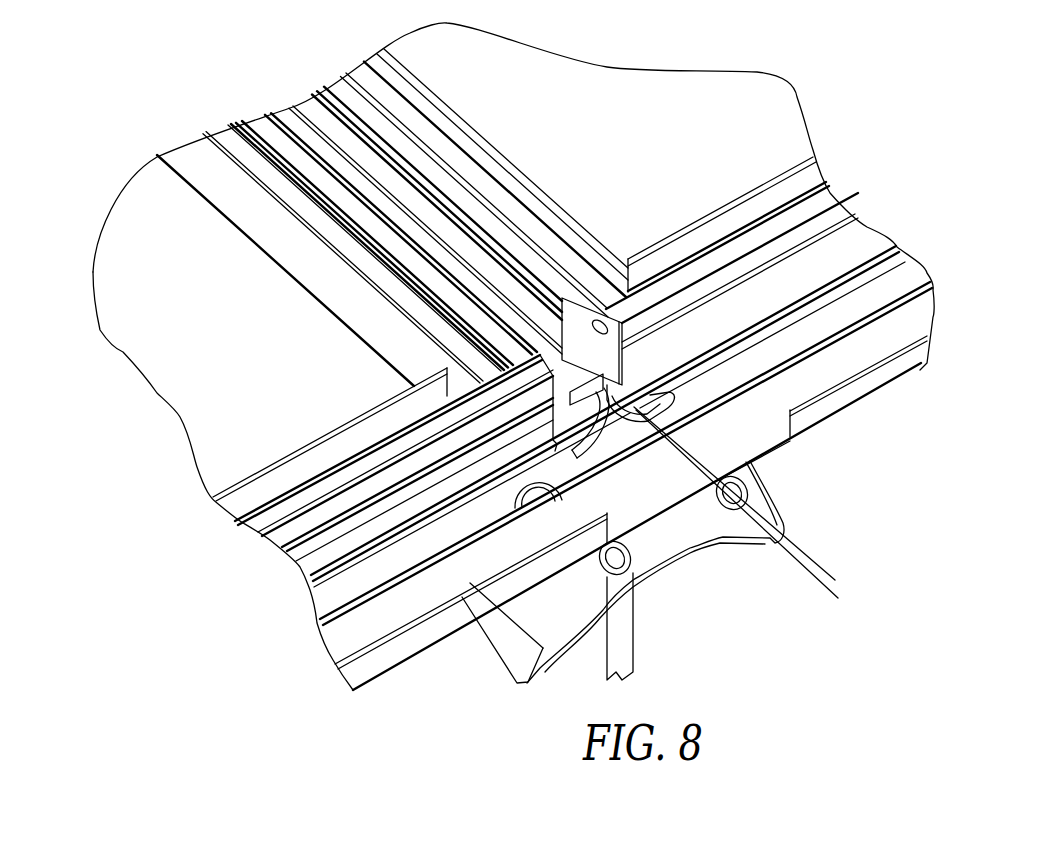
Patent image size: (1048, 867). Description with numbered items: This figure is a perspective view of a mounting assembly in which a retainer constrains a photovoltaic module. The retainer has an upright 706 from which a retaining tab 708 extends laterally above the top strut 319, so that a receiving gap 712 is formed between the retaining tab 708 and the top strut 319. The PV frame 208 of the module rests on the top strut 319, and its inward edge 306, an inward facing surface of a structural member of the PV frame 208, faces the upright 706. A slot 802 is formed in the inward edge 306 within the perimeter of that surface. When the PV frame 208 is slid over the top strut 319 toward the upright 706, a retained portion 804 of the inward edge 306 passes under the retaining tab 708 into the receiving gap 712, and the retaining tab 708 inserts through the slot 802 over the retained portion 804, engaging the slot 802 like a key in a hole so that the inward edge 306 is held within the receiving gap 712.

The inward edge 306 is at (463, 200).
The slot 802 is at (565, 305).
The retaining tab 708 is at (623, 390).
The PV frame 208 is at (835, 240).
The top strut 319 is at (905, 313).
The retained portion 804 is at (655, 400).
The upright 706 is at (520, 455).
The receiving gap 712 is at (833, 548).